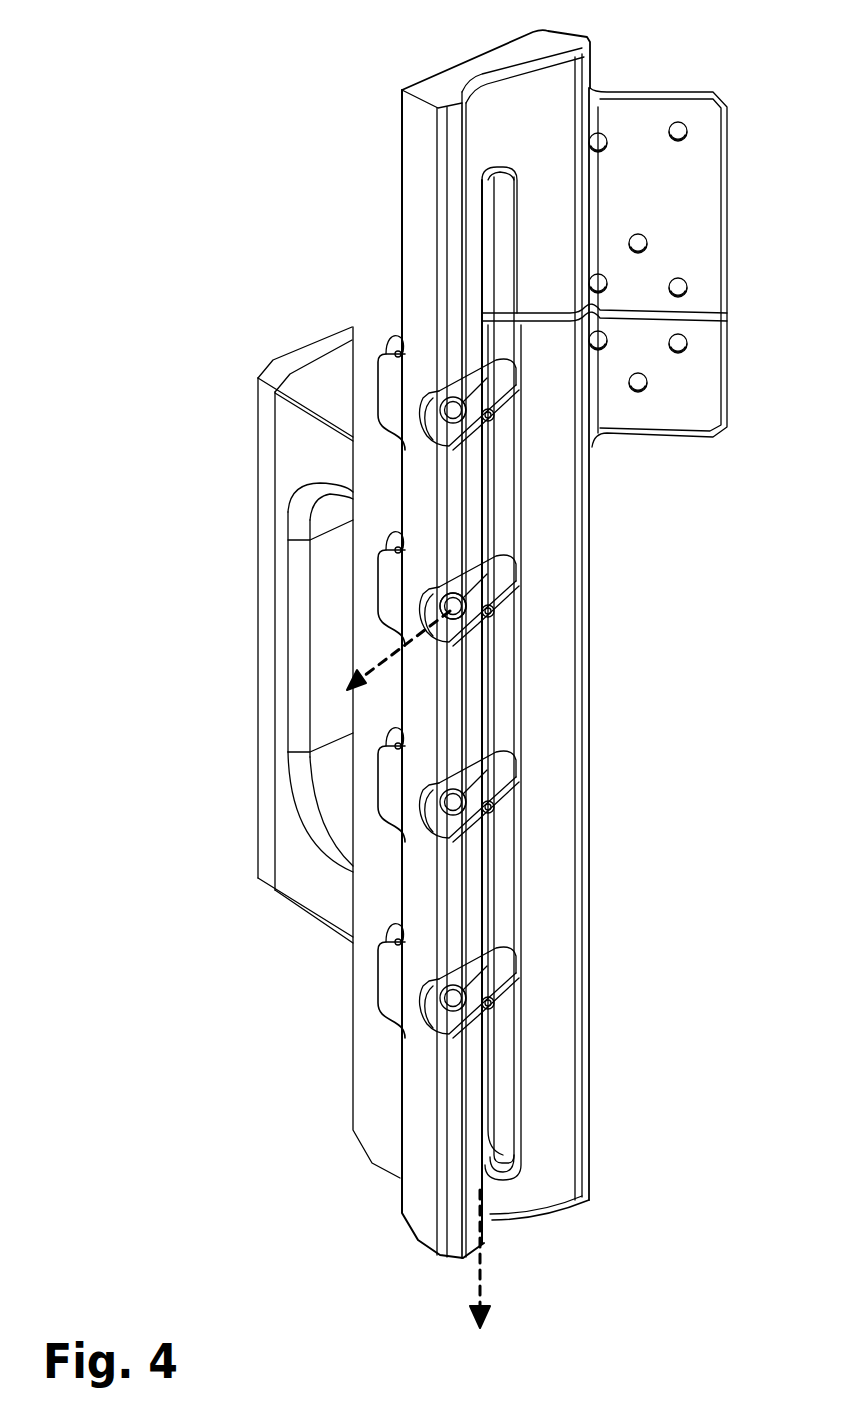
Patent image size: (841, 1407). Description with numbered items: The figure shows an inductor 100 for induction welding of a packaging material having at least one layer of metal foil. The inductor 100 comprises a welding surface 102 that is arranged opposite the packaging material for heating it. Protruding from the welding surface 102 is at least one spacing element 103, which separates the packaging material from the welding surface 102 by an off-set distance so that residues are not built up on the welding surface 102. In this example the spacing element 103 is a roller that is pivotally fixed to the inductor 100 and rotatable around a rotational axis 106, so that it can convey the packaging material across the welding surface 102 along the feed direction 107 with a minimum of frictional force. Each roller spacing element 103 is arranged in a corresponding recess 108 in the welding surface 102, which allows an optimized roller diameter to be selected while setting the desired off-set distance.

The inductor 100 is at (416, 668).
The welding surface 102 is at (468, 700).
The spacing element 103 is at (477, 597).
The rotational axis 106 is at (384, 655).
The feed direction 107 is at (478, 1273).
The recess 108 is at (430, 606).